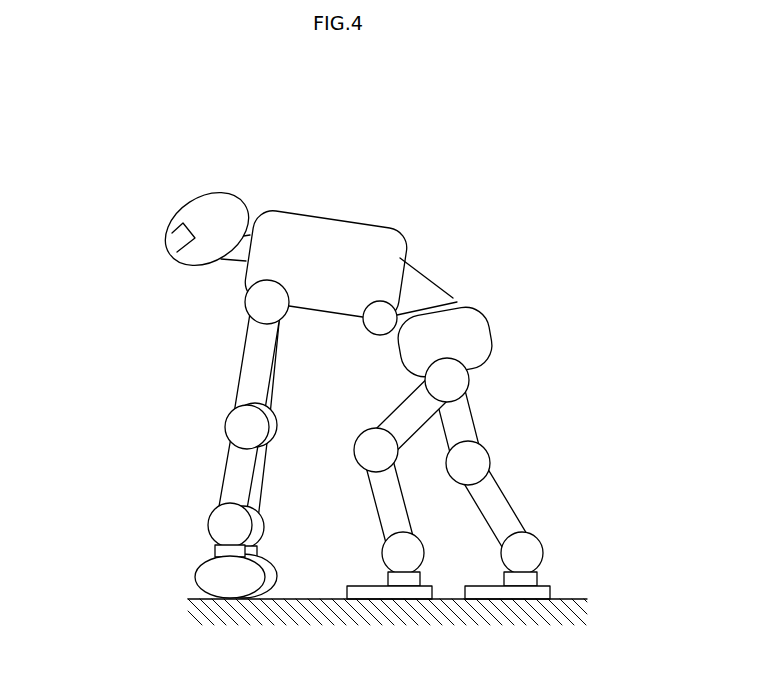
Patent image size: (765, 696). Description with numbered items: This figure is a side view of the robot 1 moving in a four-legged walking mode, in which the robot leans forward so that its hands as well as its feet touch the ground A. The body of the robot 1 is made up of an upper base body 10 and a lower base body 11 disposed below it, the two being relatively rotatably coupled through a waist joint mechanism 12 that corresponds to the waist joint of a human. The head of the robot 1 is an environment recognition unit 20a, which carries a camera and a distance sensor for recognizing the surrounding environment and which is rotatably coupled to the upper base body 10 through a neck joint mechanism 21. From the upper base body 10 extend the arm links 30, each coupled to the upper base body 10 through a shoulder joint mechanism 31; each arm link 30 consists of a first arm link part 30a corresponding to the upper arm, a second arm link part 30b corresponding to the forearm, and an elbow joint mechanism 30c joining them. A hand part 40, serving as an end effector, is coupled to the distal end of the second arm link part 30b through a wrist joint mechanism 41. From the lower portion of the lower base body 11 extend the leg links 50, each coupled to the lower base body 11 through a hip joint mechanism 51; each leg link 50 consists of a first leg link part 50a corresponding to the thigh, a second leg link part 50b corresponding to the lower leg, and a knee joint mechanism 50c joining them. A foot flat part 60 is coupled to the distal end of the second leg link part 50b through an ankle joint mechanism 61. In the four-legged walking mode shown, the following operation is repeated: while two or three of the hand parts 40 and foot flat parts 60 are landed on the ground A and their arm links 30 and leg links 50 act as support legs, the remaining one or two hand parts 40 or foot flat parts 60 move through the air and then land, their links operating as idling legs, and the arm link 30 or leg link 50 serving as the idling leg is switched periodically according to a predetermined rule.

The robot 1 is at (172, 172).
The upper base body 10 is at (300, 206).
The lower base body 11 is at (475, 303).
The waist joint mechanism 12 is at (428, 279).
The environment recognition unit 20a is at (226, 190).
The neck joint mechanism 21 is at (225, 258).
The arm link 30 is at (232, 414).
The first arm link part 30a is at (248, 398).
The second arm link part 30b is at (240, 458).
The elbow joint mechanism 30c is at (238, 427).
The shoulder joint mechanism 31 is at (266, 308).
The hand part 40 is at (198, 569).
The wrist joint mechanism 41 is at (208, 526).
The leg link 50 is at (442, 445).
The first leg link part 50a is at (400, 422).
The second leg link part 50b is at (377, 487).
The knee joint mechanism 50c is at (372, 452).
The hip joint mechanism 51 is at (458, 378).
The foot flat part 60 is at (367, 587).
The ankle joint mechanism 61 is at (390, 552).
The ground A is at (582, 599).